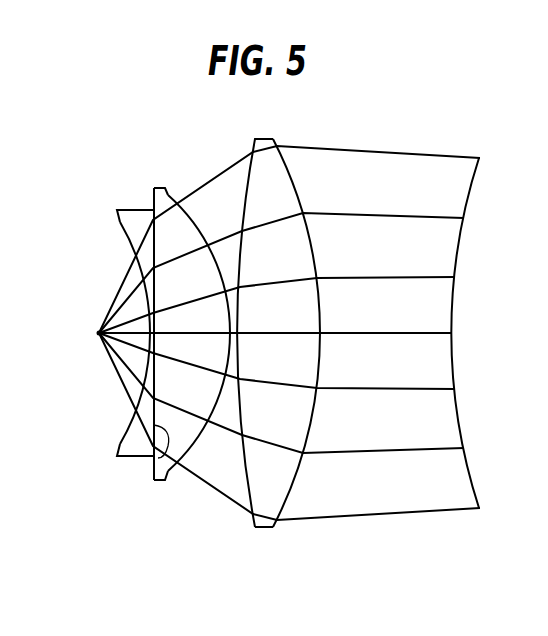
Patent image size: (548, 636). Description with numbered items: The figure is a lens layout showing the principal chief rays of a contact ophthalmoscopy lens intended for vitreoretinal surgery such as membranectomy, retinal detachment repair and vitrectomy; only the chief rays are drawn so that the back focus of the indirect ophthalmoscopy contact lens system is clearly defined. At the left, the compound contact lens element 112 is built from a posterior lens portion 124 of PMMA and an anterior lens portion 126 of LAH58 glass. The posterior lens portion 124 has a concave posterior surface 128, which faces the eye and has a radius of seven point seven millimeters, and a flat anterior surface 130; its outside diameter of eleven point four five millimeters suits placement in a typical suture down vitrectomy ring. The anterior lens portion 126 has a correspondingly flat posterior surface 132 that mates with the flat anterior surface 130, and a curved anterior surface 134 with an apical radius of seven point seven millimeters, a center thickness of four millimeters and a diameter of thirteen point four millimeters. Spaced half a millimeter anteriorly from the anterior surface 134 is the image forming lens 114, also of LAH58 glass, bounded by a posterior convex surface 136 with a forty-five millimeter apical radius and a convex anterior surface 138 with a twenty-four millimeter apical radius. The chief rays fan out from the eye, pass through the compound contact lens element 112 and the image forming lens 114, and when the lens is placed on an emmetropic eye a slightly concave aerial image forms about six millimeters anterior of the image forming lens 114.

The compound contact lens element 112 is at (135, 160).
The image forming lens 114 is at (263, 528).
The posterior lens portion 124 is at (132, 222).
The anterior lens portion 126 is at (160, 198).
The concave posterior surface 128 is at (122, 240).
The flat anterior surface 130 is at (154, 479).
The flat posterior surface 132 is at (135, 422).
The anterior surface 134 is at (198, 455).
The posterior convex surface 136 is at (248, 185).
The convex anterior surface 138 is at (287, 172).